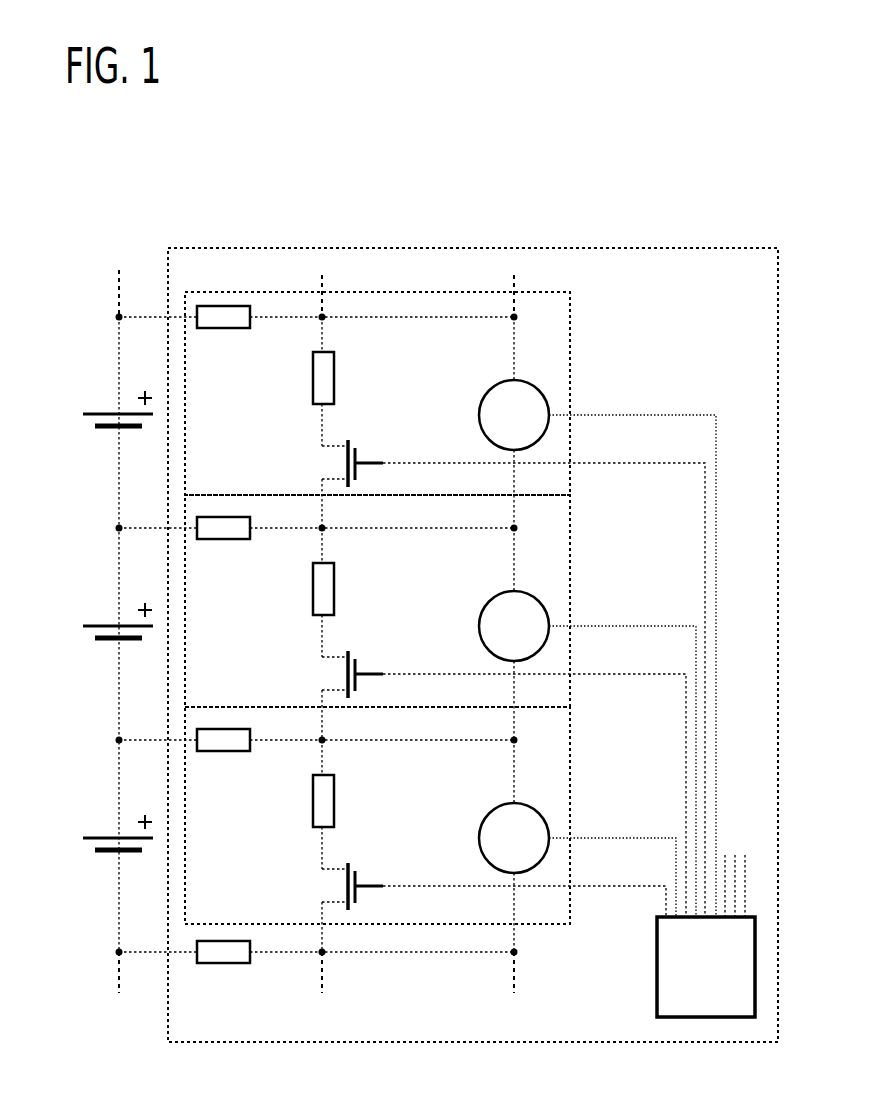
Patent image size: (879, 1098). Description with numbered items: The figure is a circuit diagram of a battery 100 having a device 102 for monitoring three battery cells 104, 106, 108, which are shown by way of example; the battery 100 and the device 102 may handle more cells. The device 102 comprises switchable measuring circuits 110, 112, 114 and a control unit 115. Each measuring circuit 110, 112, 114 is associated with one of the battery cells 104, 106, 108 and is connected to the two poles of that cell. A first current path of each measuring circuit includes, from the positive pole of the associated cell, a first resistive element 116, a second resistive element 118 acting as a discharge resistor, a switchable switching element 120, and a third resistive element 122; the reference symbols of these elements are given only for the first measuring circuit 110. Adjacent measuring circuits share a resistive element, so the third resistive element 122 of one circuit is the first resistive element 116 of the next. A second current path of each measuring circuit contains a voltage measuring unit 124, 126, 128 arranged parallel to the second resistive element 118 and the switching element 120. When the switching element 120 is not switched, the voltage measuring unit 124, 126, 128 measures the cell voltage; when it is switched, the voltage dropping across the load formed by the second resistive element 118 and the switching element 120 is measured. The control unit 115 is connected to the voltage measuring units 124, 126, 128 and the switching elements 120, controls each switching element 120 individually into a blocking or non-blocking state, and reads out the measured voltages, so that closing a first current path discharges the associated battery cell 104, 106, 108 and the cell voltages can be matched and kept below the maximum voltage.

The battery 100 is at (208, 198).
The device for monitoring battery cells 102 is at (472, 248).
The battery cell 104 is at (99, 413).
The battery cell 106 is at (99, 625).
The battery cell 108 is at (99, 837).
The first measuring circuit 110 is at (571, 352).
The second measuring circuit 112 is at (571, 565).
The third measuring circuit 114 is at (571, 777).
The control unit 115 is at (686, 981).
The first resistive element 116 is at (222, 330).
The second resistive element 118 is at (335, 377).
The switching element 120 is at (345, 460).
The third resistive element 122 is at (222, 541).
The first voltage measuring unit 124 is at (478, 414).
The voltage measuring unit 126 is at (478, 627).
The voltage measuring unit 128 is at (478, 837).